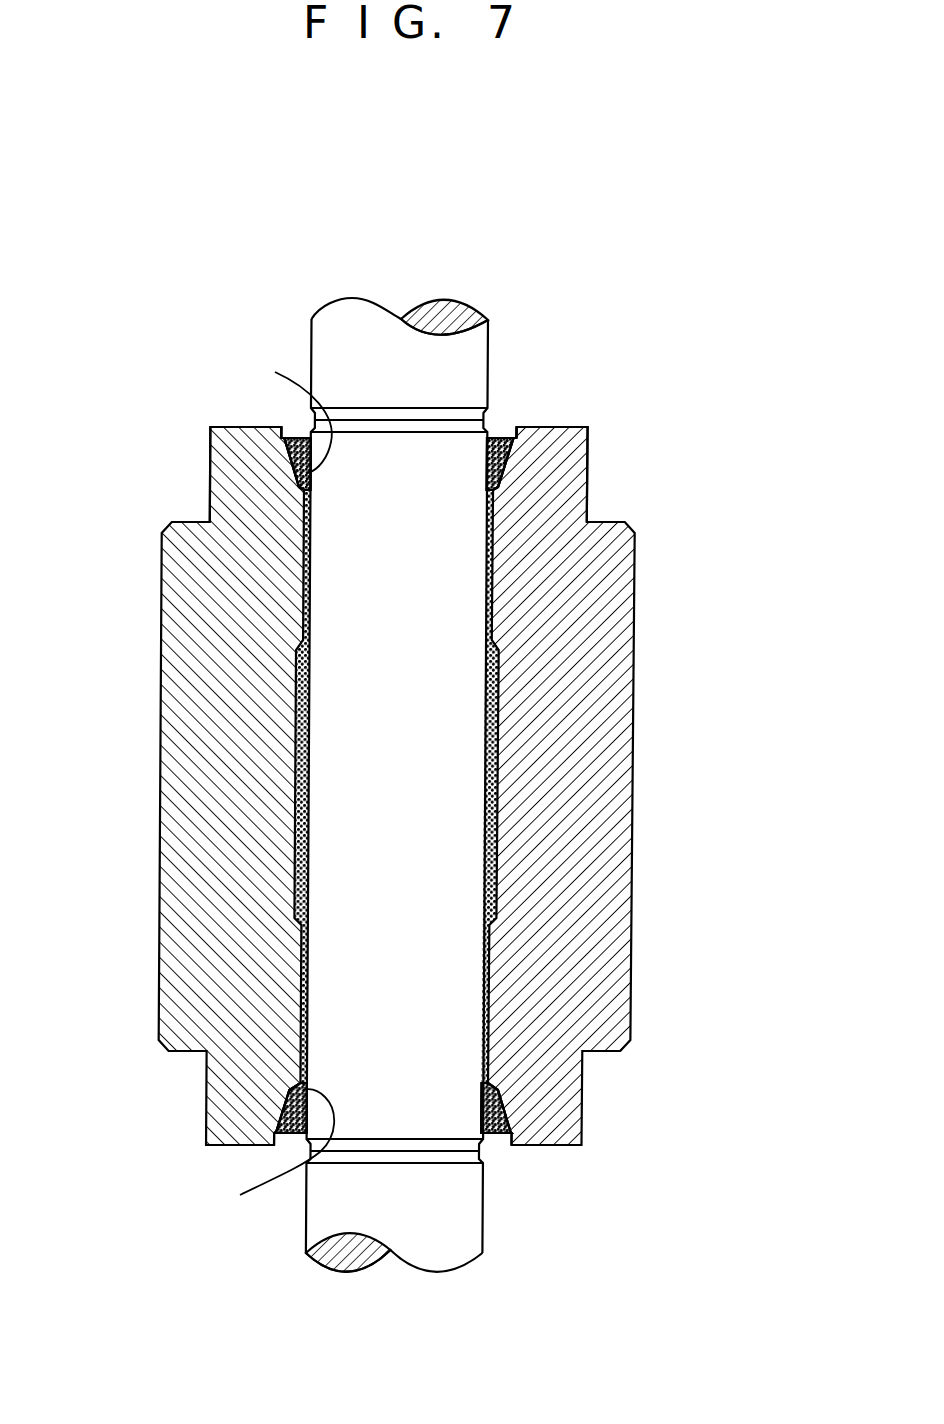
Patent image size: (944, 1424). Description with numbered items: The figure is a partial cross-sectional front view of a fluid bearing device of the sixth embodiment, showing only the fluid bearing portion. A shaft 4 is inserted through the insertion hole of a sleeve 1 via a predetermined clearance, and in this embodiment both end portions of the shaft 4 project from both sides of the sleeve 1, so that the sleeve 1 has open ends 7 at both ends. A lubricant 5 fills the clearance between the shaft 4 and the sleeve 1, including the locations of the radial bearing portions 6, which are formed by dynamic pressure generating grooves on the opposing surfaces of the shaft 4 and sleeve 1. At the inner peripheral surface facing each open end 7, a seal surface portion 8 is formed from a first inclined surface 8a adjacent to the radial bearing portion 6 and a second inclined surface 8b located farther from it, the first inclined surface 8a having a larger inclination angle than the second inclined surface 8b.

The sleeve 1 is at (593, 727).
The shaft 4 is at (358, 338).
The lubricant 5 is at (514, 453).
The radial bearing portion 6 is at (491, 557).
The open end 7 is at (498, 427).
The seal surface portion 8 is at (222, 287).
The first inclined surface 8a is at (275, 372).
The second inclined surface 8b is at (292, 437).